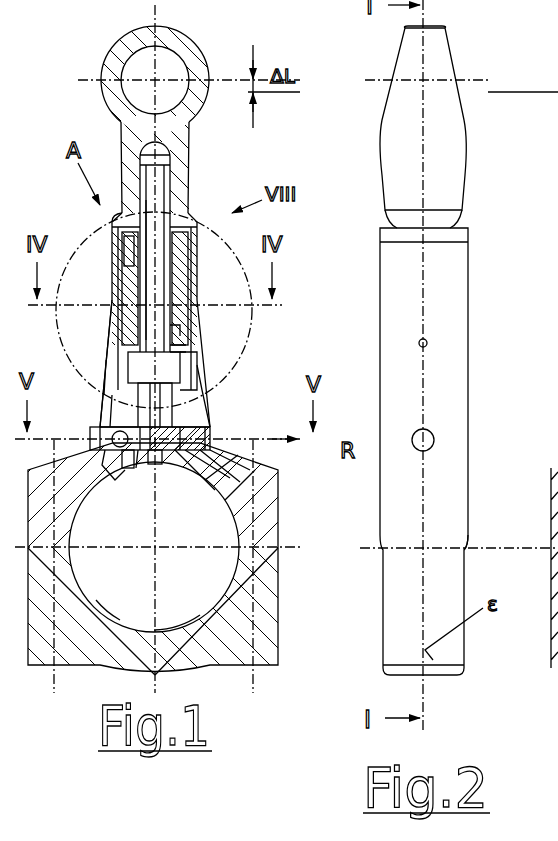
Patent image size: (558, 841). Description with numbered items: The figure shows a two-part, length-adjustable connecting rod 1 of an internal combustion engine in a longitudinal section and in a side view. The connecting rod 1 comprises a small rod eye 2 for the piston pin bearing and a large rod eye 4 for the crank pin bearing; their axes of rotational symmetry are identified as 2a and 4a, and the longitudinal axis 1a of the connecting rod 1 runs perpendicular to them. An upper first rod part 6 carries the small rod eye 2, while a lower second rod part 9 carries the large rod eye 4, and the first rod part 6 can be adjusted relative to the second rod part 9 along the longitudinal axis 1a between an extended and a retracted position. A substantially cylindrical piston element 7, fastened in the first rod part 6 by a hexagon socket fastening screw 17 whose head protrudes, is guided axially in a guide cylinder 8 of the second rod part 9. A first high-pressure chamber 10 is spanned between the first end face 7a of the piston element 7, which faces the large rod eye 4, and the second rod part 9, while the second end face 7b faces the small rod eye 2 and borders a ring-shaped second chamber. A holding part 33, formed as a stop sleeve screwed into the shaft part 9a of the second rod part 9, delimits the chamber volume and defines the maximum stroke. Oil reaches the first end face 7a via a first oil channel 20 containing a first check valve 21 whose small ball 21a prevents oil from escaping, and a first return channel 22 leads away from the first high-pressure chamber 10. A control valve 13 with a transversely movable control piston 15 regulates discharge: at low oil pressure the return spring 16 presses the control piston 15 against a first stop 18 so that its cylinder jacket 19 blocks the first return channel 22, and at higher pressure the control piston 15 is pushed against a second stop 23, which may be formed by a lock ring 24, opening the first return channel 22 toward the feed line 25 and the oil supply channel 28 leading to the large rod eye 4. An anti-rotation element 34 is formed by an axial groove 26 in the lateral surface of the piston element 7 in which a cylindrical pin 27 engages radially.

In FIG. 1, the connecting rod 1 is at (203, 197).
In FIG. 2, the connecting rod 1 is at (477, 327).
In FIG. 1, the longitudinal axis 1a is at (165, 595).
In FIG. 1, the small rod eye 2 is at (168, 62).
In FIG. 1, the axis of rotational symmetry of the small rod eye 2a is at (125, 68).
In FIG. 2, the axis of rotational symmetry of the small rod eye 2a is at (470, 80).
In FIG. 1, the large rod eye 4 is at (232, 528).
In FIG. 1, the axis of rotational symmetry of the large rod eye 4a is at (158, 575).
In FIG. 2, the axis of rotational symmetry of the large rod eye 4a is at (480, 548).
In FIG. 1, the first rod part 6 is at (180, 137).
In FIG. 2, the first rod part 6 is at (448, 190).
In FIG. 1, the piston element 7 is at (116, 332).
In FIG. 1, the first end face 7a is at (122, 347).
In FIG. 1, the second end face 7b is at (122, 283).
In FIG. 1, the guide cylinder 8 is at (114, 300).
In FIG. 1, the second rod part 9 is at (275, 527).
In FIG. 2, the second rod part 9 is at (450, 414).
In FIG. 1, the shaft part 9a is at (195, 292).
In FIG. 1, the first high-pressure chamber 10 is at (200, 382).
In FIG. 1, the control valve 13 is at (162, 462).
In FIG. 1, the control piston 15 is at (262, 500).
In FIG. 2, the control piston 15 is at (434, 442).
In FIG. 1, the return spring 16 is at (242, 452).
In FIG. 1, the fastening screw 17 is at (171, 338).
In FIG. 1, the first stop 18 is at (143, 478).
In FIG. 1, the cylinder jacket 19 is at (215, 408).
In FIG. 1, the first oil channel 20 is at (118, 437).
In FIG. 1, the first check valve 21 is at (120, 392).
In FIG. 1, the small ball 21a is at (126, 420).
In FIG. 1, the first return channel 22 is at (154, 367).
In FIG. 1, the second stop 23 is at (213, 432).
In FIG. 1, the lock ring 24 is at (245, 462).
In FIG. 1, the feed line 25 is at (152, 540).
In FIG. 1, the axial groove 26 is at (182, 332).
In FIG. 1, the cylindrical pin 27 is at (186, 352).
In FIG. 2, the cylindrical pin 27 is at (430, 344).
In FIG. 1, the oil supply channel 28 is at (130, 470).
In FIG. 1, the holding part 33 is at (130, 258).
In FIG. 1, the anti-rotation element 34 is at (200, 362).